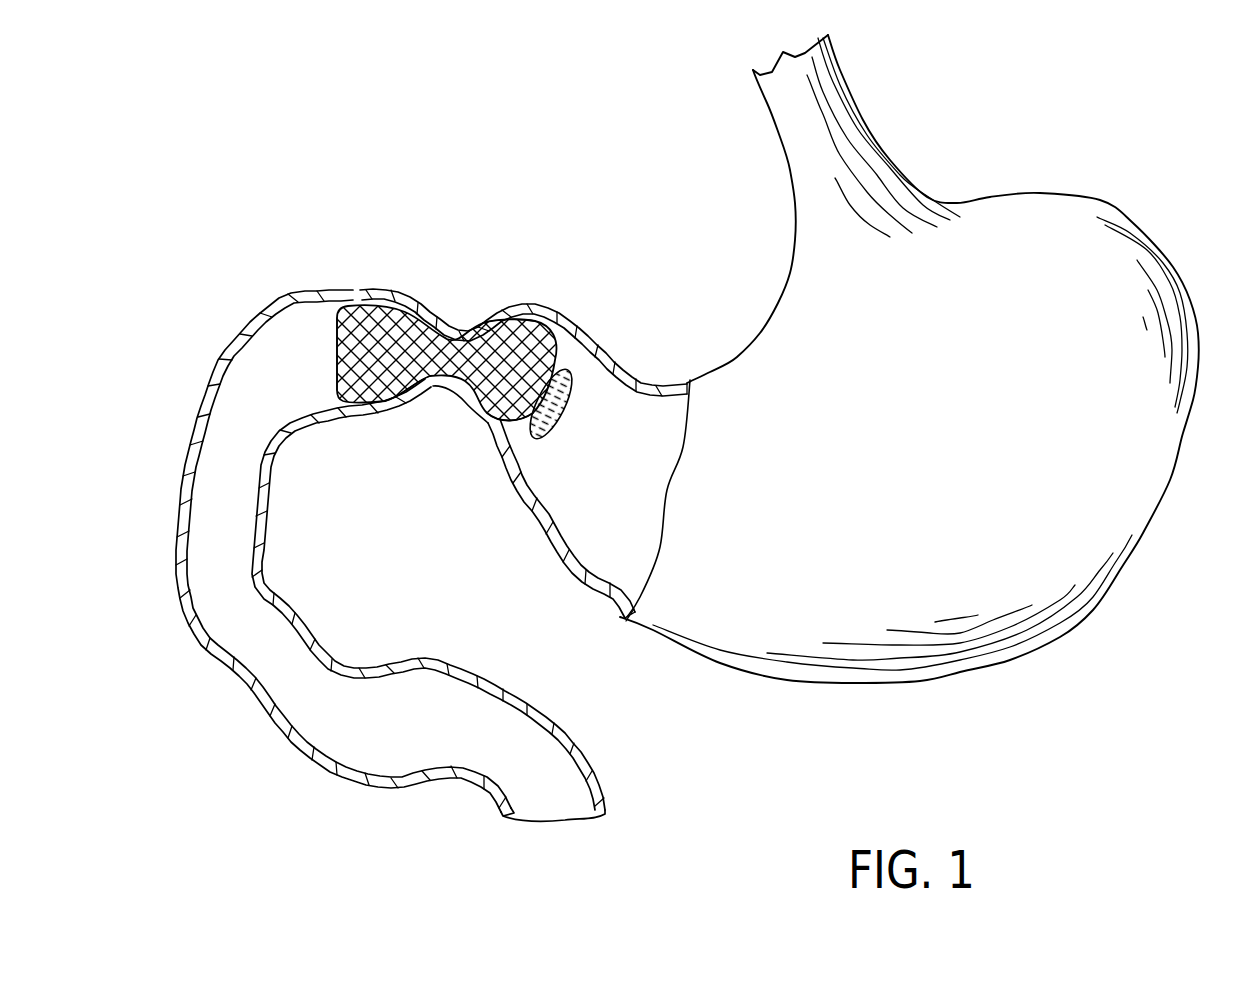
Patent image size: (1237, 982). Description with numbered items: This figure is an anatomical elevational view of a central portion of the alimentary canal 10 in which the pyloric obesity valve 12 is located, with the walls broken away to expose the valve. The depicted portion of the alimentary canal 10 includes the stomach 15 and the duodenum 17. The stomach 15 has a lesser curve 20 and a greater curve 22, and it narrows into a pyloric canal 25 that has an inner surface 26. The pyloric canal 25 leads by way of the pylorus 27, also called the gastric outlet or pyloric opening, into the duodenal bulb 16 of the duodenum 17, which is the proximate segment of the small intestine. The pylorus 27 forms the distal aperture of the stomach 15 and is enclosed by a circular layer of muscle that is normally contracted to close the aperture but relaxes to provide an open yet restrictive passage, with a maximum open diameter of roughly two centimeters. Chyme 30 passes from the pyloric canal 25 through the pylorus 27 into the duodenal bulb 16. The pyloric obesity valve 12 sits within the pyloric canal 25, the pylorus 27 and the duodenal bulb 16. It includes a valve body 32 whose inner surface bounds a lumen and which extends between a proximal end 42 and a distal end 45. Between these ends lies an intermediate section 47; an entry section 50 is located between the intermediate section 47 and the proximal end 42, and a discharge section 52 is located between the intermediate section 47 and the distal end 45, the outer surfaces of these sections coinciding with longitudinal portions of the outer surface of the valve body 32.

The alimentary canal 10 is at (945, 165).
The pyloric obesity valve 12 is at (500, 344).
The stomach 15 is at (950, 419).
The duodenal bulb 16 is at (378, 410).
The duodenum 17 is at (281, 301).
The lesser curve 20 is at (737, 353).
The greater curve 22 is at (1143, 533).
The pyloric canal 25 is at (573, 445).
The inner surface 26 is at (570, 423).
The pylorus 27 is at (421, 318).
The chyme 30 is at (573, 353).
The valve body 32 is at (537, 345).
The proximal end 42 is at (555, 420).
The distal end 45 is at (335, 347).
The intermediate section 47 is at (450, 390).
The entry section 50 is at (487, 364).
The discharge section 52 is at (368, 332).